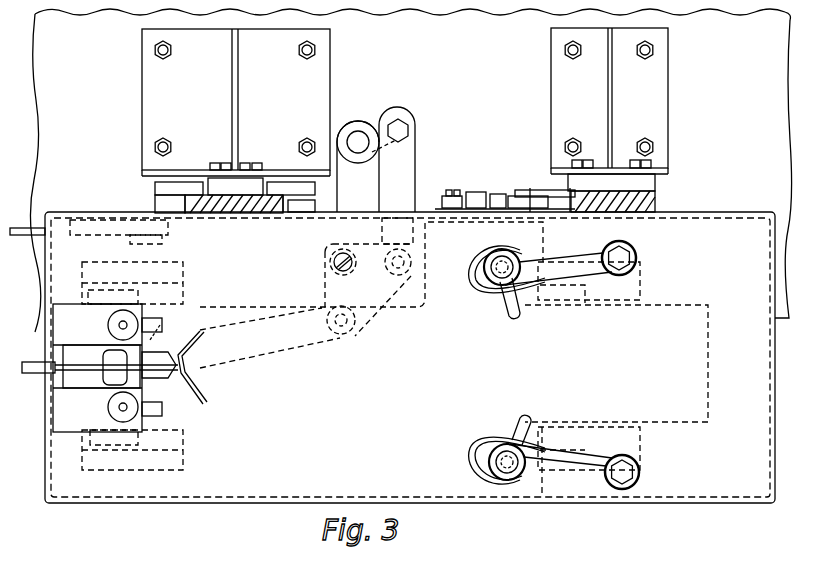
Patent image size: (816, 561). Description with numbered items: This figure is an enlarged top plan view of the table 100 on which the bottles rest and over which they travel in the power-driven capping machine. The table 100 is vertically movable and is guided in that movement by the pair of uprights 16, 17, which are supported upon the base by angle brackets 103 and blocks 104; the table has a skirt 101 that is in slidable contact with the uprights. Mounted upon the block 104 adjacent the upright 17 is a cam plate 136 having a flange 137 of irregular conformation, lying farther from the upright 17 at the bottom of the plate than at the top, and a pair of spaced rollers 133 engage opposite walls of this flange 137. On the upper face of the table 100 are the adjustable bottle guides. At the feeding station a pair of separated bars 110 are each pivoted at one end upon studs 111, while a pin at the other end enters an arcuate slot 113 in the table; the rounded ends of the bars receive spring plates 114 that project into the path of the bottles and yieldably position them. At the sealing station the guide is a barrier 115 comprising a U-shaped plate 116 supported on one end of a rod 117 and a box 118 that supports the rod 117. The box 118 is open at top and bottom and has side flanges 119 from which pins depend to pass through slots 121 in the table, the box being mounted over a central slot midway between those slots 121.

The upright 16 is at (185, 205).
The upright 17 is at (644, 192).
The table 100 is at (410, 357).
The skirt 101 is at (158, 201).
The angle bracket 103 is at (405, 102).
The block 104 is at (233, 178).
The bar 110 is at (555, 274).
The stud 111 is at (636, 256).
The arcuate slot 113 is at (512, 318).
The spring plate 114 is at (478, 288).
The barrier 115 is at (170, 416).
The U-shaped plate 116 is at (190, 392).
The rod 117 is at (35, 373).
The box 118 is at (143, 345).
The side flange 119 is at (107, 368).
The slot 121 is at (160, 328).
The roller 133 is at (425, 205).
The cam plate 136 is at (512, 196).
The flange 137 is at (468, 200).